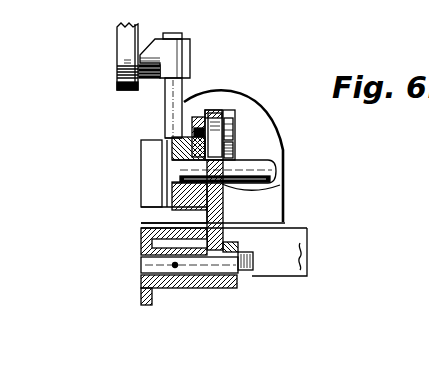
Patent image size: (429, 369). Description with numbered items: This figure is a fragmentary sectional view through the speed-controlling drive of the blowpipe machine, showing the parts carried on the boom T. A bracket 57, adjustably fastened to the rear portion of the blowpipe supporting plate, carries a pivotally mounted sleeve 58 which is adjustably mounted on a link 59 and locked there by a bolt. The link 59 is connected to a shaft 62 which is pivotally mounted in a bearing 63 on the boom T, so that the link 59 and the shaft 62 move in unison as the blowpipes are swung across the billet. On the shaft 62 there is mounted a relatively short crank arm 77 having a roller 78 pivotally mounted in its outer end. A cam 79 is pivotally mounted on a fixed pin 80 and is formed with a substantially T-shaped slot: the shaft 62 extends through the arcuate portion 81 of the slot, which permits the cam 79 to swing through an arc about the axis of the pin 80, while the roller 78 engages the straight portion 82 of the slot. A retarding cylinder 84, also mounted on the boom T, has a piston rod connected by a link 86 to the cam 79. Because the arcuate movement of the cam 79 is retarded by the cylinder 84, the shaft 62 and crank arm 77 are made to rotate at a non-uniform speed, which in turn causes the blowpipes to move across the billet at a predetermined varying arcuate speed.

The bracket 57 is at (117, 47).
The sleeve 58 is at (190, 50).
The link 59 is at (172, 94).
The retarding cylinder 84 is at (243, 93).
The roller 78 is at (233, 117).
The link 86 is at (233, 127).
The straight portion of the slot 82 is at (233, 141).
The shaft 62 is at (258, 163).
The arcuate portion of the slot 81 is at (262, 187).
The crank arm 77 is at (195, 137).
The bearing 63 is at (148, 177).
The cam 79 is at (228, 203).
The fixed pin 80 is at (222, 262).
The boom T is at (302, 243).